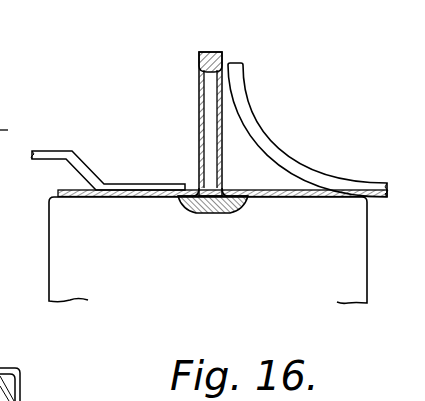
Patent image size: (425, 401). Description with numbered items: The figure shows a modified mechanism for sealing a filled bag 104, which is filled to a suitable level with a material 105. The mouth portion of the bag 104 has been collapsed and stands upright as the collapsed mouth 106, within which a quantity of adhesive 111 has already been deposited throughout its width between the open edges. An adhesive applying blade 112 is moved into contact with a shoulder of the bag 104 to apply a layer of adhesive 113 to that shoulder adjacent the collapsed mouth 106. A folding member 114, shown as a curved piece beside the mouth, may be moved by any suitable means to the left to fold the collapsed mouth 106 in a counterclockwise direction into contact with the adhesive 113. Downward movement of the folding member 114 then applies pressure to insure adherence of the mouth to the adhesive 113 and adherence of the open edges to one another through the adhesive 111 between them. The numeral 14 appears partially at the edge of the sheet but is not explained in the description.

The bag 104 is at (62, 277).
The material 105 is at (213, 217).
The collapsed mouth portion 106 is at (199, 73).
The adhesive 111 is at (240, 42).
The adhesive applying blade 112 is at (83, 165).
The layer of adhesive 113 is at (123, 194).
The folding member 114 is at (258, 148).
The element 14 is at (13, 117).